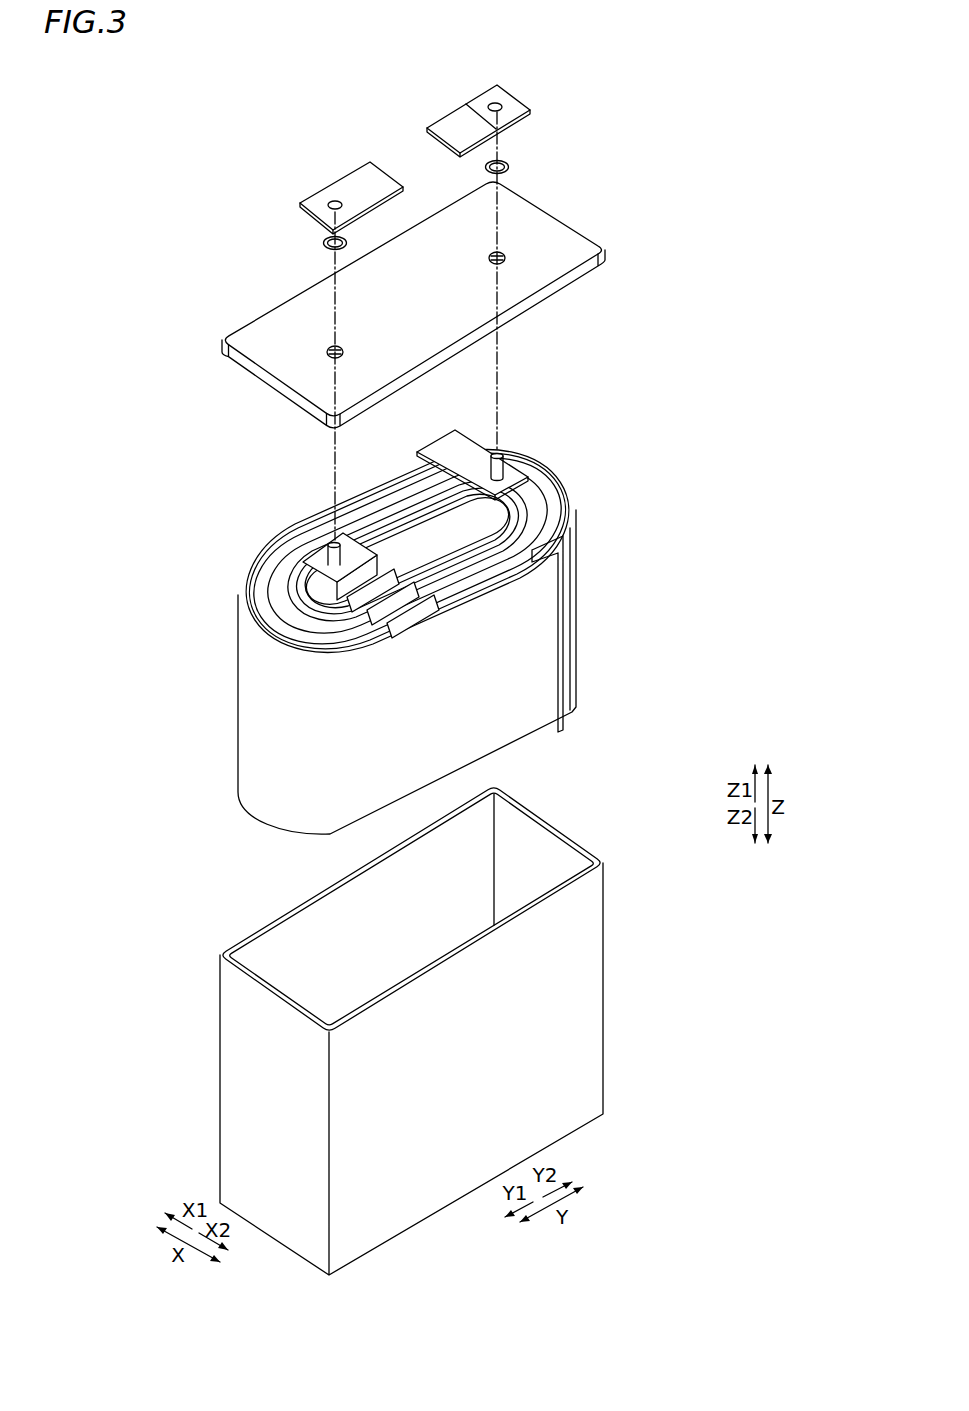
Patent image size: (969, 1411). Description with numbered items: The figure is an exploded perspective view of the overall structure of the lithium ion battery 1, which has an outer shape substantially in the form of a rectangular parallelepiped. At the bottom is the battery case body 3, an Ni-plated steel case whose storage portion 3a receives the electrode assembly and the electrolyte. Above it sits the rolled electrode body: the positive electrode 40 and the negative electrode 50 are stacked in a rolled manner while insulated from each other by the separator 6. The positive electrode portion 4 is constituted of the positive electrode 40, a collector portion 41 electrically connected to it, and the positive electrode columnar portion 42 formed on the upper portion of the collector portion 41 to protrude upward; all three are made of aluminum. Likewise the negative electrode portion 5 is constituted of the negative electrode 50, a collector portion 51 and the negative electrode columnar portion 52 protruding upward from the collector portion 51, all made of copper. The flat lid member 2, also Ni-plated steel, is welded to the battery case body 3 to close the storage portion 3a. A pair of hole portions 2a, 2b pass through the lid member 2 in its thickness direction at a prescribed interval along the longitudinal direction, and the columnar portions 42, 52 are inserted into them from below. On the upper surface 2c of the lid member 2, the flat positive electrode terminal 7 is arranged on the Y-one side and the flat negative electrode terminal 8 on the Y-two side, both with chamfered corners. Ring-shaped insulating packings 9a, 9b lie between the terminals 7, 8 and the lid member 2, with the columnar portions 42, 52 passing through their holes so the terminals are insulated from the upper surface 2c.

The lithium ion battery 1 is at (742, 83).
The lid member 2 is at (407, 270).
The hole portion 2a is at (328, 340).
The hole portion 2b is at (502, 246).
The upper surface 2c is at (520, 198).
The battery case body 3 is at (381, 1031).
The storage portion 3a is at (264, 951).
The positive electrode portion 4 is at (152, 570).
The positive electrode 40 is at (350, 573).
The collector portion 41 is at (333, 597).
The positive electrode columnar portion 42 is at (322, 548).
The negative electrode portion 5 is at (662, 382).
The negative electrode 50 is at (548, 587).
The collector portion 51 is at (462, 452).
The negative electrode columnar portion 52 is at (497, 455).
The separator 6 is at (352, 643).
The positive electrode terminal 7 is at (345, 162).
The negative electrode terminal 8 is at (468, 90).
The packing 9a is at (323, 243).
The packing 9b is at (505, 162).